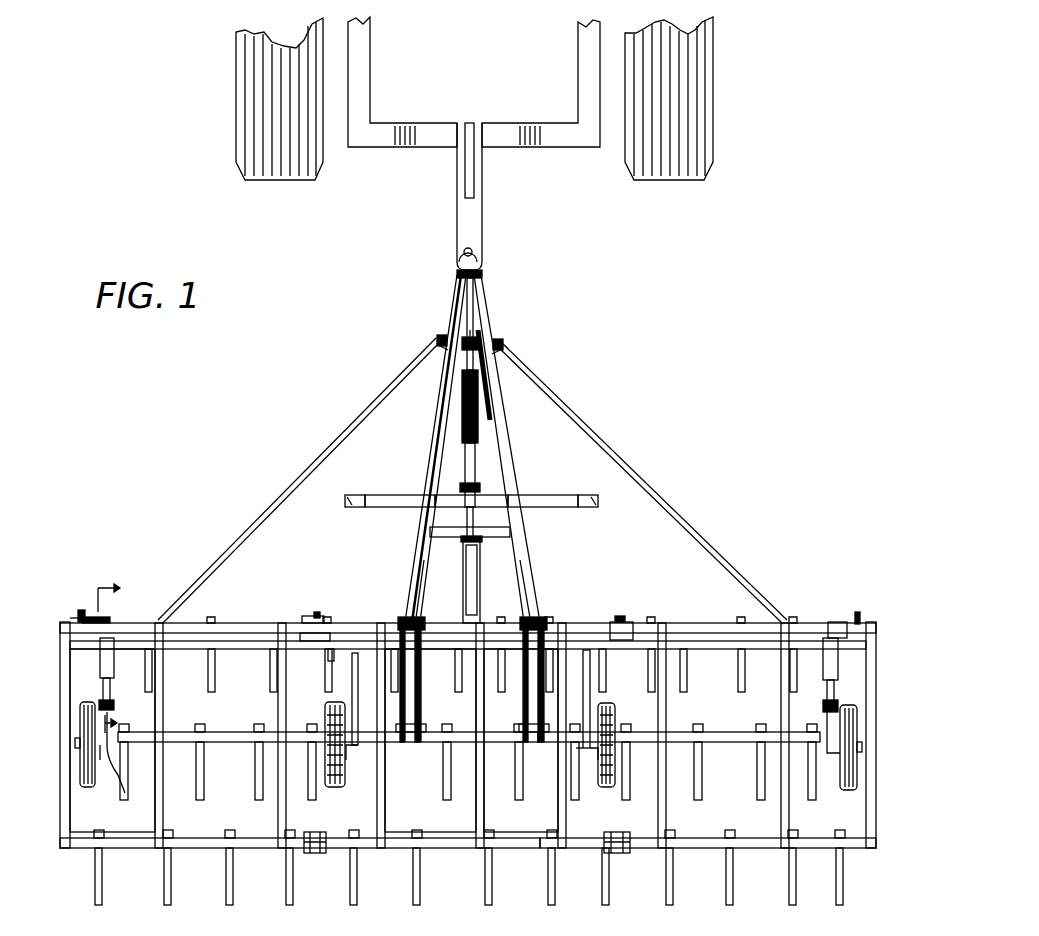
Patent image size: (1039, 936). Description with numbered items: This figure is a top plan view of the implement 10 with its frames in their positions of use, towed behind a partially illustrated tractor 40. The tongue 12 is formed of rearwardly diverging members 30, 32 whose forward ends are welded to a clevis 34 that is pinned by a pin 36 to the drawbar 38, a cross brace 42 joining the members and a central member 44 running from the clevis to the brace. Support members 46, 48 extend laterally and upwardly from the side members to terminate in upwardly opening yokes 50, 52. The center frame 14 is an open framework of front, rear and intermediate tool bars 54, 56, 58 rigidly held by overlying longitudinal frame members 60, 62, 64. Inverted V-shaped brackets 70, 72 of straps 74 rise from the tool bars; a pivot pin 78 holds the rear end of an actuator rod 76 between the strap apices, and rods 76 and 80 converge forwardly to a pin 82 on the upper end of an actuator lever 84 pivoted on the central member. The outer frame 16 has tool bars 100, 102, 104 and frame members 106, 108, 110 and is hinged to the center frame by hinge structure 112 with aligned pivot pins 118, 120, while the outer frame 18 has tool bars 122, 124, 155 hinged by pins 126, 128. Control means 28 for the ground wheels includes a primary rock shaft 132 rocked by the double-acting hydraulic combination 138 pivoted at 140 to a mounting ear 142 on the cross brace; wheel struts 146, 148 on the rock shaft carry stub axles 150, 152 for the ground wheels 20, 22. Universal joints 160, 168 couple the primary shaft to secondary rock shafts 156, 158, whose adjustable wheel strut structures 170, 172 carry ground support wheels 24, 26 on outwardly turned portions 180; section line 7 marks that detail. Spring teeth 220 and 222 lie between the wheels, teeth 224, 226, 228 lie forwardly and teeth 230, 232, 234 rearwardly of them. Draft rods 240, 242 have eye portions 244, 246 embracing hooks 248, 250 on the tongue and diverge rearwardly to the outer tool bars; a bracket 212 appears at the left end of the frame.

The section line 7 is at (111, 649).
The implement 10 is at (505, 328).
The tongue 12 is at (522, 475).
The center frame 14 is at (443, 852).
The outer frame 16 is at (195, 852).
The outer frame 18 is at (765, 852).
The ground wheel 20 is at (312, 780).
The ground wheel 22 is at (606, 790).
The ground support wheel 24 is at (92, 790).
The ground support wheel 26 is at (843, 792).
The control means 28 is at (480, 608).
The member 30 is at (436, 437).
The member 32 is at (505, 430).
The clevis 34 is at (485, 258).
The pin 36 is at (468, 256).
The drawbar 38 is at (477, 220).
The tractor 40 is at (726, 78).
The cross brace 42 is at (430, 535).
The central member 44 is at (468, 312).
The support member 46 is at (392, 505).
The support member 48 is at (552, 507).
The support yoke 50 is at (345, 502).
The support yoke 52 is at (560, 497).
The front tool bar 54 is at (340, 630).
The rear tool bar 56 is at (520, 850).
The intermediate tool bar 58 is at (432, 738).
The frame member 60 is at (385, 822).
The frame member 62 is at (484, 818).
The frame member 64 is at (562, 783).
The bracket 70 is at (405, 735).
The bracket 72 is at (518, 717).
The straps 74 is at (410, 712).
The actuator rod 76 is at (422, 568).
The pivot pin 78 is at (415, 620).
The actuator rod 80 is at (528, 575).
The pivot pin 82 is at (465, 390).
The actuator lever 84 is at (478, 372).
The front tool bar 100 is at (240, 627).
The rear tool bar 102 is at (250, 848).
The intermediate tool bar 104 is at (210, 735).
The frame member 106 is at (62, 690).
The frame member 108 is at (162, 722).
The frame member 110 is at (283, 790).
The hinge structure 112 is at (307, 616).
The pivot pin 118 is at (320, 614).
The pivot pin 120 is at (316, 858).
The tool bar 122 is at (710, 630).
The tool bar 124 is at (700, 848).
The pivot pin 126 is at (617, 618).
The pivot pin 128 is at (615, 858).
The primary rock shaft 132 is at (610, 715).
The hydraulic cylinder piston rod combination 138 is at (478, 588).
The pivotal connection 140 is at (485, 521).
The mounting ear 142 is at (462, 543).
The wheel strut 146 is at (355, 650).
The wheel strut 148 is at (585, 650).
The stub axle 150 is at (352, 748).
The stub axle 152 is at (585, 790).
The tool bar 155 is at (730, 735).
The secondary rock shaft 156 is at (190, 650).
The secondary rock shaft 158 is at (715, 650).
The universal joint 160 is at (310, 655).
The universal joint 168 is at (610, 650).
The wheel strut structure 170 is at (122, 660).
The wheel strut structure 172 is at (850, 700).
The outwardly turned portion 180 is at (125, 795).
The bracket 212 is at (78, 612).
The spring teeth 220 is at (202, 800).
The spring teeth 222 is at (388, 790).
The spring teeth 224 is at (505, 680).
The spring teeth 226 is at (215, 672).
The spring teeth 228 is at (740, 695).
The spring teeth 230 is at (415, 892).
The spring teeth 232 is at (165, 902).
The spring teeth 234 is at (843, 898).
The draft rod 240 is at (302, 487).
The draft rod 242 is at (645, 487).
The eye portion 244 is at (447, 348).
The eye portion 246 is at (500, 343).
The hook 248 is at (440, 340).
The hook 250 is at (502, 330).